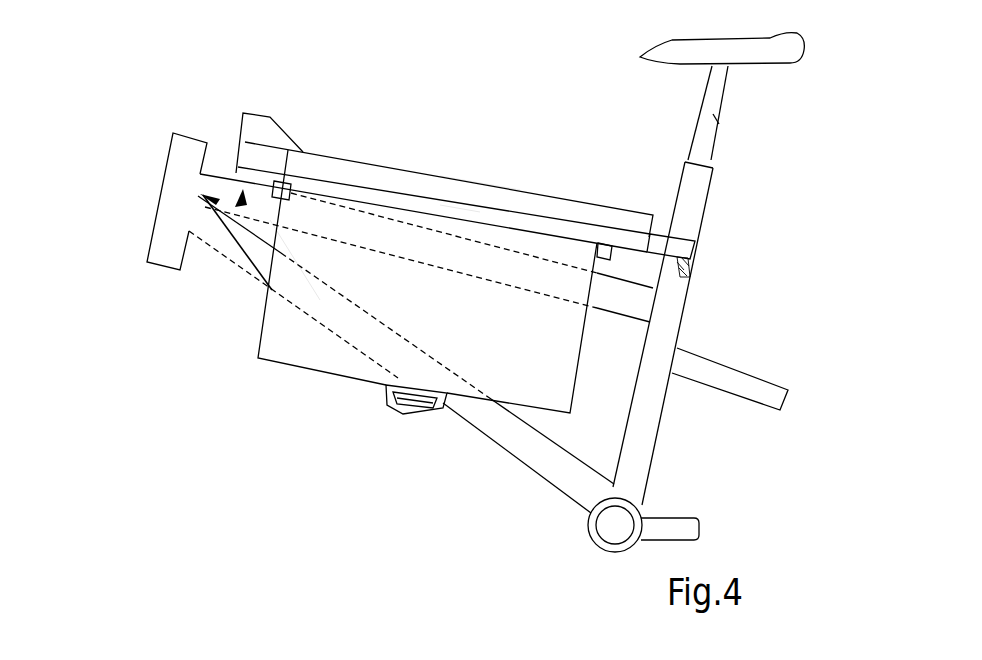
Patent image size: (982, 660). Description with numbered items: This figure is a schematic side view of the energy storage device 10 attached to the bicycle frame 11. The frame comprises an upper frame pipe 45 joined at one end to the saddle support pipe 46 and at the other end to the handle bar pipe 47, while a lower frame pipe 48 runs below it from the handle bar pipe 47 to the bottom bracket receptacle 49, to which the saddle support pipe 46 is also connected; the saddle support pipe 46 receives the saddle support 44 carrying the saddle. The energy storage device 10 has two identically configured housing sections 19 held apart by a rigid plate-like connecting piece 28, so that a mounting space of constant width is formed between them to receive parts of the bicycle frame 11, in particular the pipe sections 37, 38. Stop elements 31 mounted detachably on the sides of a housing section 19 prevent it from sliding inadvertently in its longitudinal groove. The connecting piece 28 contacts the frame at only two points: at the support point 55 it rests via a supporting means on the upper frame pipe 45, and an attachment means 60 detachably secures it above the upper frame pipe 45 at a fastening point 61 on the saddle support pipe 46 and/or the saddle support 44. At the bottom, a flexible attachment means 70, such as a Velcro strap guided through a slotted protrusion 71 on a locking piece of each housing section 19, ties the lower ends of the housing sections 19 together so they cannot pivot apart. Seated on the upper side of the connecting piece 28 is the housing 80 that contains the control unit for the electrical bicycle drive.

The energy storage device 10 is at (426, 96).
The bicycle frame 11 is at (722, 338).
The housing section 19 is at (311, 348).
The connecting piece 28 is at (240, 137).
The stop element 31 is at (278, 188).
The pipe section 37 is at (457, 233).
The pipe section 38 is at (291, 300).
The saddle support 44 is at (718, 121).
The upper frame pipe 45 is at (620, 298).
The saddle support pipe 46 is at (707, 210).
The handle bar pipe 47 is at (187, 182).
The lower frame pipe 48 is at (503, 437).
The bottom bracket receptacle 49 is at (632, 556).
The support point 55 is at (236, 206).
The attachment means 60 is at (700, 248).
The fastening point 61 is at (690, 282).
The attachment means 70 is at (414, 418).
The slotted protrusion 71 is at (384, 400).
The housing 80 is at (535, 194).